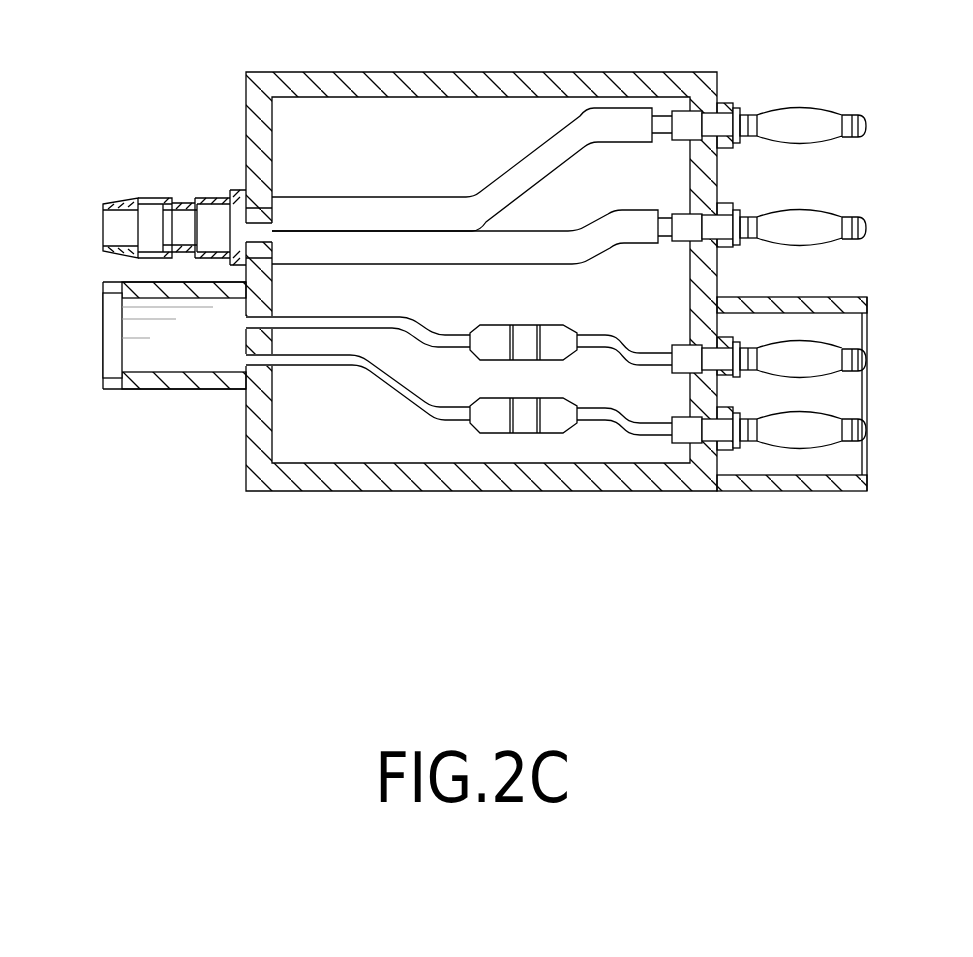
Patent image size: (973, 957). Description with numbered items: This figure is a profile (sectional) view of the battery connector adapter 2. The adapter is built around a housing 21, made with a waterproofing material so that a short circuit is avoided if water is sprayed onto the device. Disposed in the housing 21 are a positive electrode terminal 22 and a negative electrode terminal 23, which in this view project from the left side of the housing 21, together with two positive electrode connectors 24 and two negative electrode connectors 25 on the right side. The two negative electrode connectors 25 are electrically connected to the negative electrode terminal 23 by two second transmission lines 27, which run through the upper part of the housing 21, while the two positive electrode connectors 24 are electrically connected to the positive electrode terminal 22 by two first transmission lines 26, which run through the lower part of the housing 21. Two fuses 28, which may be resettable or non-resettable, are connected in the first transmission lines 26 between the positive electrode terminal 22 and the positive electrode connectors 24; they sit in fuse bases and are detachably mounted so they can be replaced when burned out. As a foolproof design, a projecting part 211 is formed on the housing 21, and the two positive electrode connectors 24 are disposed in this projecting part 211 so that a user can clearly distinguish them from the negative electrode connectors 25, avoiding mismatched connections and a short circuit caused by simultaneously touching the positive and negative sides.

The battery connector adapter 2 is at (222, 545).
The housing 21 is at (513, 478).
The projecting part 211 is at (827, 485).
The positive electrode terminal 22 is at (145, 378).
The negative electrode terminal 23 is at (142, 200).
The positive electrode connectors 24 is at (820, 353).
The negative electrode connectors 25 is at (815, 120).
The first transmission lines 26 is at (318, 322).
The second transmission lines 27 is at (572, 135).
The fuses 28 is at (555, 333).